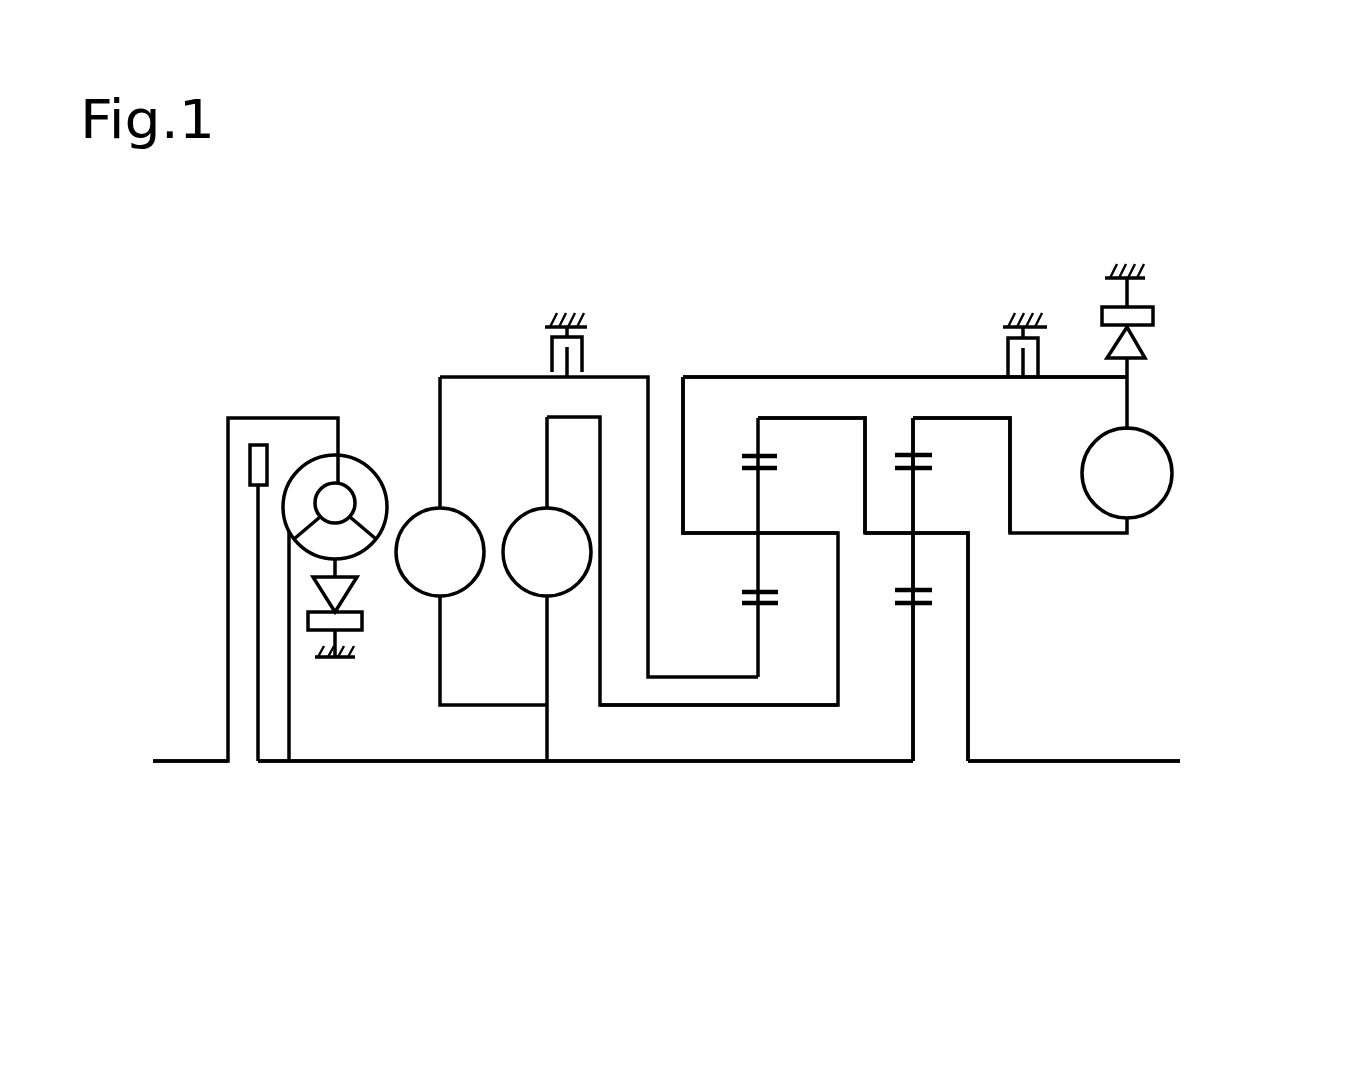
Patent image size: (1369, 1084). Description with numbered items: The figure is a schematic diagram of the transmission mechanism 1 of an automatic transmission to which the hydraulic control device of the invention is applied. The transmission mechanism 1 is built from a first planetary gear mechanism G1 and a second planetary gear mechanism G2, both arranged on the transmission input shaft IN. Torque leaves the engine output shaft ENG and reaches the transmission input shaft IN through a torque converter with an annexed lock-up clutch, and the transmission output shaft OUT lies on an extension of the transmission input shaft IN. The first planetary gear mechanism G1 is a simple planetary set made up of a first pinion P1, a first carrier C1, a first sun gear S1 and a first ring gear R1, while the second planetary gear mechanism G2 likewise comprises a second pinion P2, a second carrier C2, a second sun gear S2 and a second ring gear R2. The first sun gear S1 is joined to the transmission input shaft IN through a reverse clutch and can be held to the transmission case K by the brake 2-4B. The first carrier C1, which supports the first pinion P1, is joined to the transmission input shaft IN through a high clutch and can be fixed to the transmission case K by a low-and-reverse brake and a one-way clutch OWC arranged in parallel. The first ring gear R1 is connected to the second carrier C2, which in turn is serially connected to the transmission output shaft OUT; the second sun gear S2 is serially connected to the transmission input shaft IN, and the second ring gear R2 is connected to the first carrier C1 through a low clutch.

The transmission mechanism 1 is at (1214, 273).
The engine output shaft ENG is at (180, 763).
The transmission input shaft IN is at (398, 763).
The transmission output shaft OUT is at (1043, 763).
The transmission case K is at (540, 318).
The 2-4 brake 2-4B is at (583, 355).
The one-way clutch OWC is at (1155, 316).
The first ring gear R1 is at (757, 455).
The first sun gear S1 is at (762, 612).
The first pinion P1 is at (762, 508).
The first carrier C1 is at (702, 535).
The second ring gear R2 is at (913, 455).
The second sun gear S2 is at (911, 642).
The second pinion P2 is at (916, 497).
The second carrier C2 is at (970, 622).
The first planetary gear mechanism G1 is at (763, 724).
The second planetary gear mechanism G2 is at (918, 781).